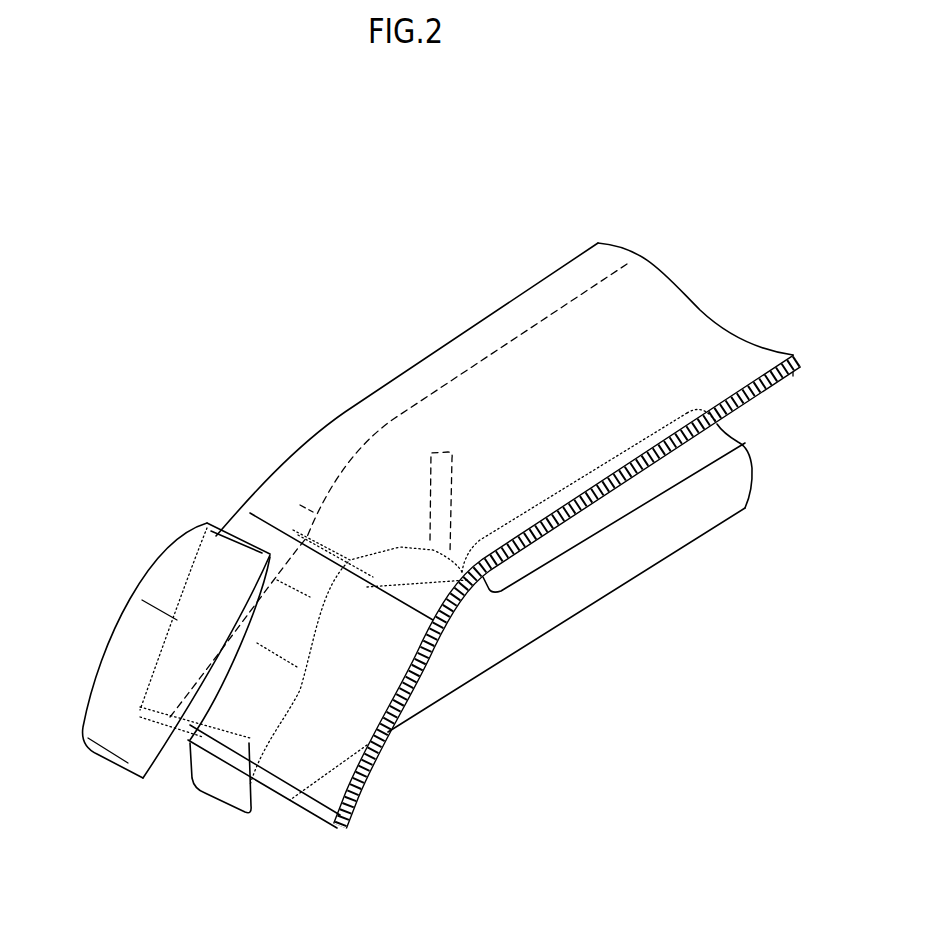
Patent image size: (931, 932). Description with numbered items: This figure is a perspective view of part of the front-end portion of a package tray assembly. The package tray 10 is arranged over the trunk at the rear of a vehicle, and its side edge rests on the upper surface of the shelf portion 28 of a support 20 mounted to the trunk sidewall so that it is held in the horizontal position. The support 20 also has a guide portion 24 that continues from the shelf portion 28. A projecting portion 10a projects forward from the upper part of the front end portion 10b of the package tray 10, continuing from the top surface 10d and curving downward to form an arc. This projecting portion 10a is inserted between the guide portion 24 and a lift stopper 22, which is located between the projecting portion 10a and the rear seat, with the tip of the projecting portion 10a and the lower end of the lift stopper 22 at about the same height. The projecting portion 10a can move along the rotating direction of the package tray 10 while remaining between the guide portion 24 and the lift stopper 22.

The package tray 10 is at (472, 311).
The projecting portion 10a is at (300, 505).
The front end portion 10b is at (470, 502).
The top surface 10d is at (473, 407).
The support 20 is at (570, 623).
The lift stopper 22 is at (130, 657).
The guide portion 24 is at (440, 680).
The shelf portion 28 is at (652, 547).